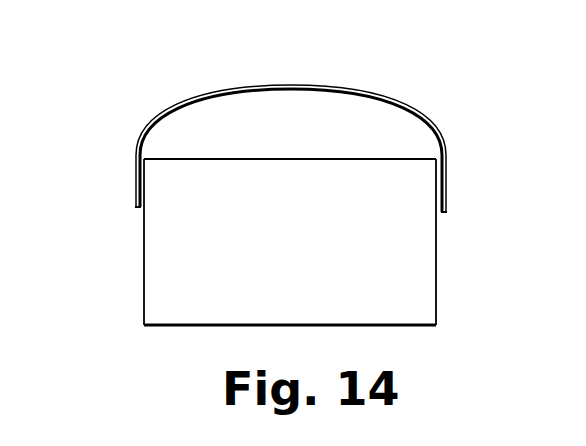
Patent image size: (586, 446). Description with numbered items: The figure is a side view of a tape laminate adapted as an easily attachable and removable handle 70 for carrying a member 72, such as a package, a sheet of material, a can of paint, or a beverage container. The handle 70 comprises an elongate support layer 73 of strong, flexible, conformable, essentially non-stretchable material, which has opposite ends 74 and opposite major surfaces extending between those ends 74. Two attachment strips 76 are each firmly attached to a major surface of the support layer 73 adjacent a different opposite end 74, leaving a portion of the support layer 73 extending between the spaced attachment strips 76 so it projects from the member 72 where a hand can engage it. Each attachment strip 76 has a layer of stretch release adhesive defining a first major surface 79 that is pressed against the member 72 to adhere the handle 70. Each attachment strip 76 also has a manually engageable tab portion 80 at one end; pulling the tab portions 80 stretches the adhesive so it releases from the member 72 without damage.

The handle 70 is at (299, 181).
The member 72 is at (306, 242).
The support layer 73 is at (280, 85).
The opposite ends 74 is at (137, 207).
The attachment strips 76 is at (139, 183).
The first major surface 79 is at (145, 172).
The tab portion 80 is at (142, 223).